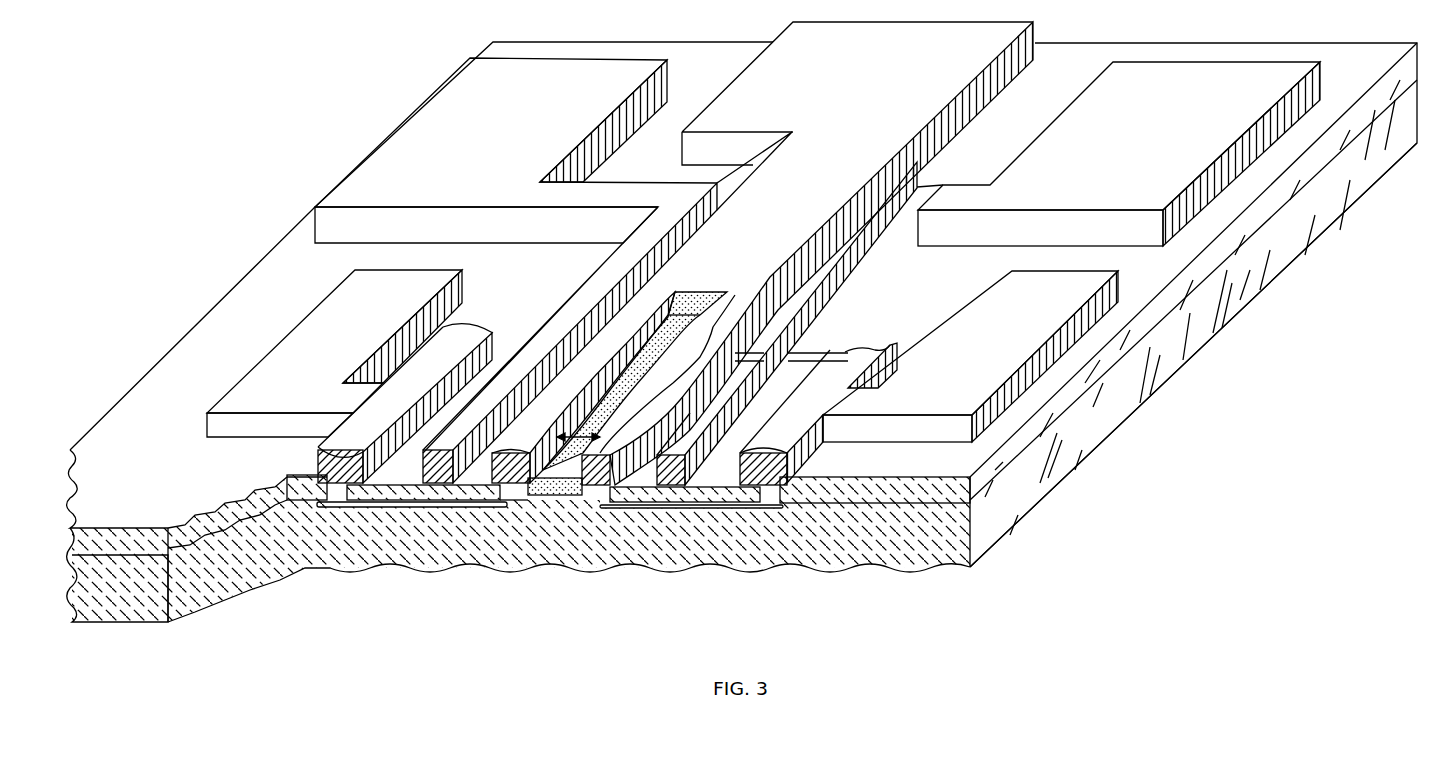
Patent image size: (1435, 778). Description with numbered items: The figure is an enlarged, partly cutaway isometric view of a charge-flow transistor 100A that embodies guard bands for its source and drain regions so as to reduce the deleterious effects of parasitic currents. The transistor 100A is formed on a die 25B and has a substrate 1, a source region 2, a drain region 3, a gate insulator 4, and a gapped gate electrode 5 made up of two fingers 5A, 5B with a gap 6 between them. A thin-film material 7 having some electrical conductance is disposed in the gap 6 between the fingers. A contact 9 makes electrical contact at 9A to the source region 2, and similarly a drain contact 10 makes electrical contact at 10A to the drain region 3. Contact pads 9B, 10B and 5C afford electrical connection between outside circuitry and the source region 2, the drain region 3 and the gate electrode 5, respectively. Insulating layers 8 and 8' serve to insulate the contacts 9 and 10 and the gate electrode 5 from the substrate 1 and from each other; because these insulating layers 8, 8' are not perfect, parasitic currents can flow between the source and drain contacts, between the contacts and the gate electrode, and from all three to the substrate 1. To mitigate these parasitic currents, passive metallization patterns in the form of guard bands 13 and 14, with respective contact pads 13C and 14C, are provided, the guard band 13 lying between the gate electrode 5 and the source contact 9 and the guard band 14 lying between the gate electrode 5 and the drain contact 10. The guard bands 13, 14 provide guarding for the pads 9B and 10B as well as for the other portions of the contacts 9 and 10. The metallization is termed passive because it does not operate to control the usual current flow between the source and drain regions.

The substrate 1 is at (878, 545).
The source region 2 is at (663, 507).
The drain region 3 is at (382, 503).
The gate insulator 4 is at (510, 515).
The gapped gate electrode 5 is at (810, 193).
The finger 5A is at (733, 297).
The finger 5B is at (653, 293).
The contact pad 5C is at (893, 97).
The gap 6 is at (565, 440).
The thin-film material 7 is at (583, 457).
The insulating layer 8 is at (623, 544).
The insulating layer 8' is at (553, 547).
The contact 9 is at (833, 404).
The electrical contact 9A is at (780, 503).
The contact pad 9B is at (1025, 338).
The drain contact 10 is at (400, 409).
The electrical contact 10A is at (318, 482).
The contact pad 10B is at (370, 339).
The guard band 13 is at (787, 327).
The contact pad 13C is at (1150, 162).
The guard band 14 is at (585, 300).
The contact pad 14C is at (503, 147).
The die 25B is at (1117, 438).
The charge-flow transistor 100A is at (362, 126).